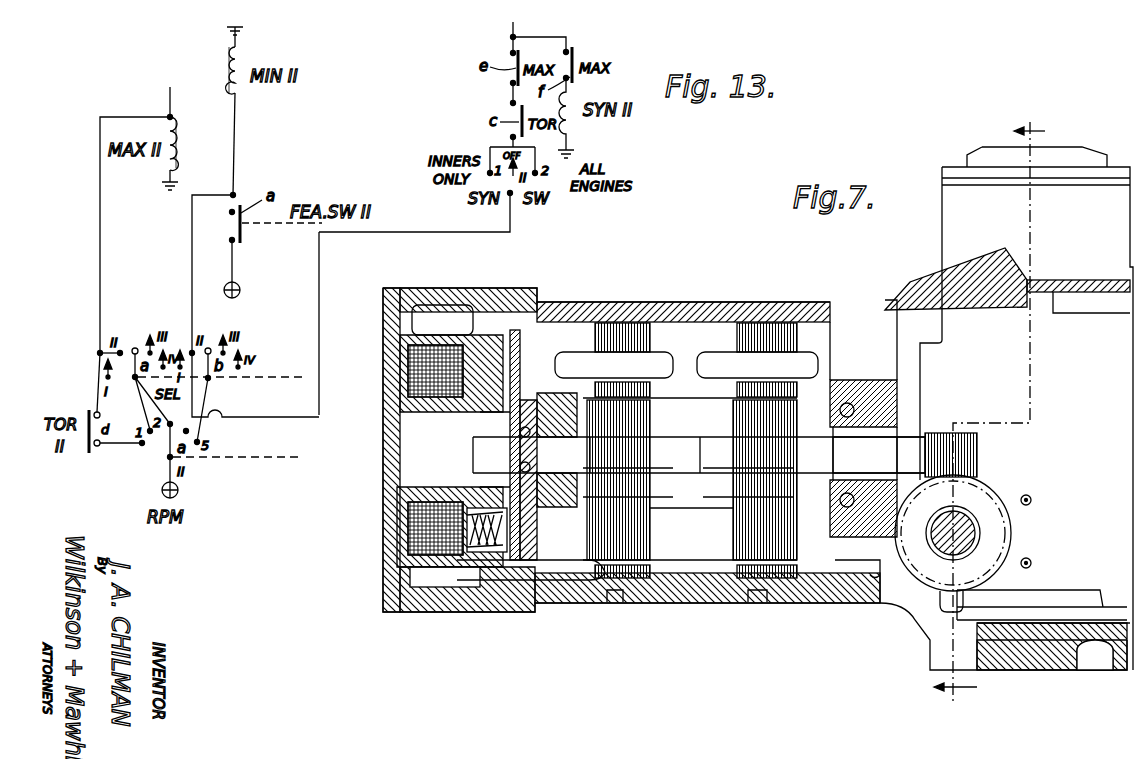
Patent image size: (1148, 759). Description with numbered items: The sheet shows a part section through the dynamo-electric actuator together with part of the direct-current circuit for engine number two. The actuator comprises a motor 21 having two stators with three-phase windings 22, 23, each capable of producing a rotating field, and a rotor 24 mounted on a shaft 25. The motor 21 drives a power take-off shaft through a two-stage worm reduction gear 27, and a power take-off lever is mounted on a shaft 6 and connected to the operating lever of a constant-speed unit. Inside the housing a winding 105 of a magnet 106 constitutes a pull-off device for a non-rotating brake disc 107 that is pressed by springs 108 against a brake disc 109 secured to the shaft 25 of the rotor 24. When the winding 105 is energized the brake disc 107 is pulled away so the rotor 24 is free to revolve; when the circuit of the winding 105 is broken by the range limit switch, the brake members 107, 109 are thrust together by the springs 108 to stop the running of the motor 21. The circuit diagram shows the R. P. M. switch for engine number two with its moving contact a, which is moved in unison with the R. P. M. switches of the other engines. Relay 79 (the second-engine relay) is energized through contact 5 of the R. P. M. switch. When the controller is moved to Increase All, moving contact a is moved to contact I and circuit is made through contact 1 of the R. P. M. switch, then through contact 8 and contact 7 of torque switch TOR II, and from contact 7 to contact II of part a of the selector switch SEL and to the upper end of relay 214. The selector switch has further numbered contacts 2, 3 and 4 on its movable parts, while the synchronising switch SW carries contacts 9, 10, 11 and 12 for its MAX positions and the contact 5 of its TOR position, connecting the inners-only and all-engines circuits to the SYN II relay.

In FIG. 7, the motor 21 is at (395, 283).
In FIG. 7, the three-phase winding 22 is at (587, 365).
In FIG. 7, the three-phase winding 23 is at (730, 365).
In FIG. 7, the rotor 24 is at (677, 430).
In FIG. 7, the shaft 25 is at (900, 433).
In FIG. 7, the worm reduction gear 27 is at (1012, 527).
In FIG. 13, the shaft 6 is at (506, 136).
In FIG. 7, the shaft 6 is at (1003, 412).
In FIG. 7, the winding 105 is at (410, 545).
In FIG. 7, the magnet 106 is at (418, 490).
In FIG. 7, the non-rotating brake disc 107 is at (513, 568).
In FIG. 7, the springs 108 is at (487, 550).
In FIG. 7, the brake disc 109 is at (530, 570).
In FIG. 13, the relay 79 is at (230, 74).
In FIG. 13, the relay 214 is at (178, 148).
In FIG. 13, the switch contact 1 is at (223, 213).
In FIG. 13, the switch contact 2 is at (223, 242).
In FIG. 13, the switch contact 3 is at (175, 424).
In FIG. 13, the switch contact 4 is at (191, 435).
In FIG. 13, the switch contact 5 is at (503, 103).
In FIG. 13, the switch contact 7 is at (103, 411).
In FIG. 13, the switch contact 8 is at (101, 450).
In FIG. 13, the switch contact 9 is at (500, 46).
In FIG. 13, the switch contact 10 is at (499, 90).
In FIG. 13, the switch contact 11 is at (577, 40).
In FIG. 13, the switch contact 12 is at (579, 83).